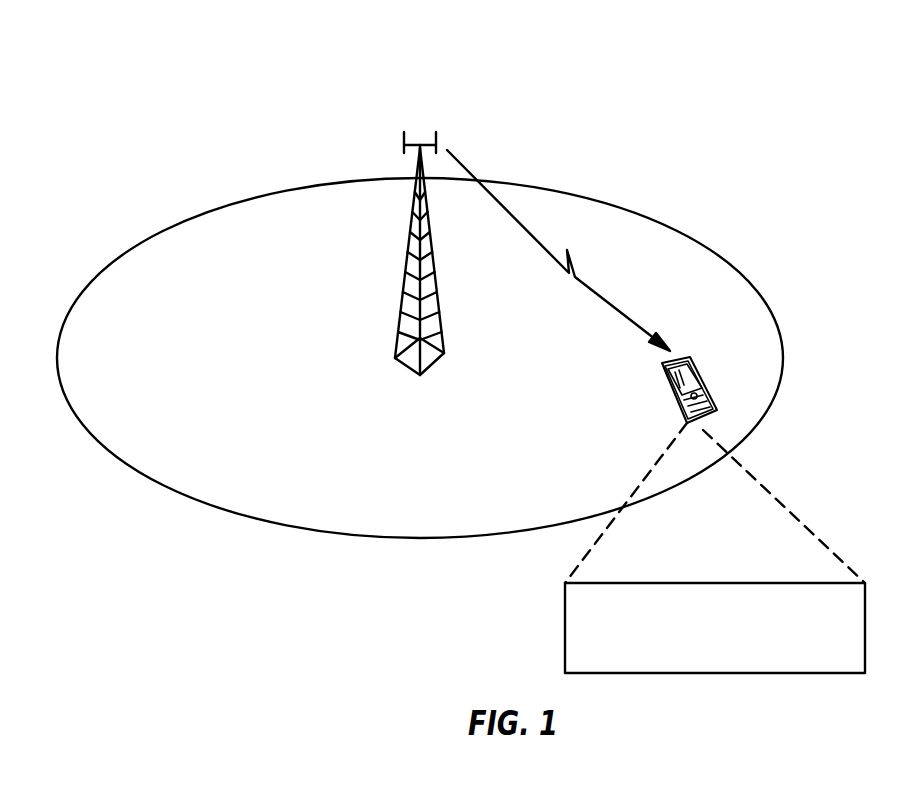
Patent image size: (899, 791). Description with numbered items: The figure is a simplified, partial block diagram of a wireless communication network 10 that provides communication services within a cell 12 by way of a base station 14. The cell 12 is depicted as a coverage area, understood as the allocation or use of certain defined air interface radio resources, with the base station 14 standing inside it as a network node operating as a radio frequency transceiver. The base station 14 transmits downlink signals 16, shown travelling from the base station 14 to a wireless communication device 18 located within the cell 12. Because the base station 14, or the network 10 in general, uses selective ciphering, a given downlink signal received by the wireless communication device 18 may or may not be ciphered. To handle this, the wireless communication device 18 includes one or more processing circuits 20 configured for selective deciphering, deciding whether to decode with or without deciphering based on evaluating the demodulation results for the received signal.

The wireless communication network 10 is at (593, 110).
The cell 12 is at (280, 527).
The base station 14 is at (408, 371).
The downlink signals 16 is at (603, 283).
The wireless communication device 18 is at (706, 387).
The processing circuits 20 is at (715, 548).